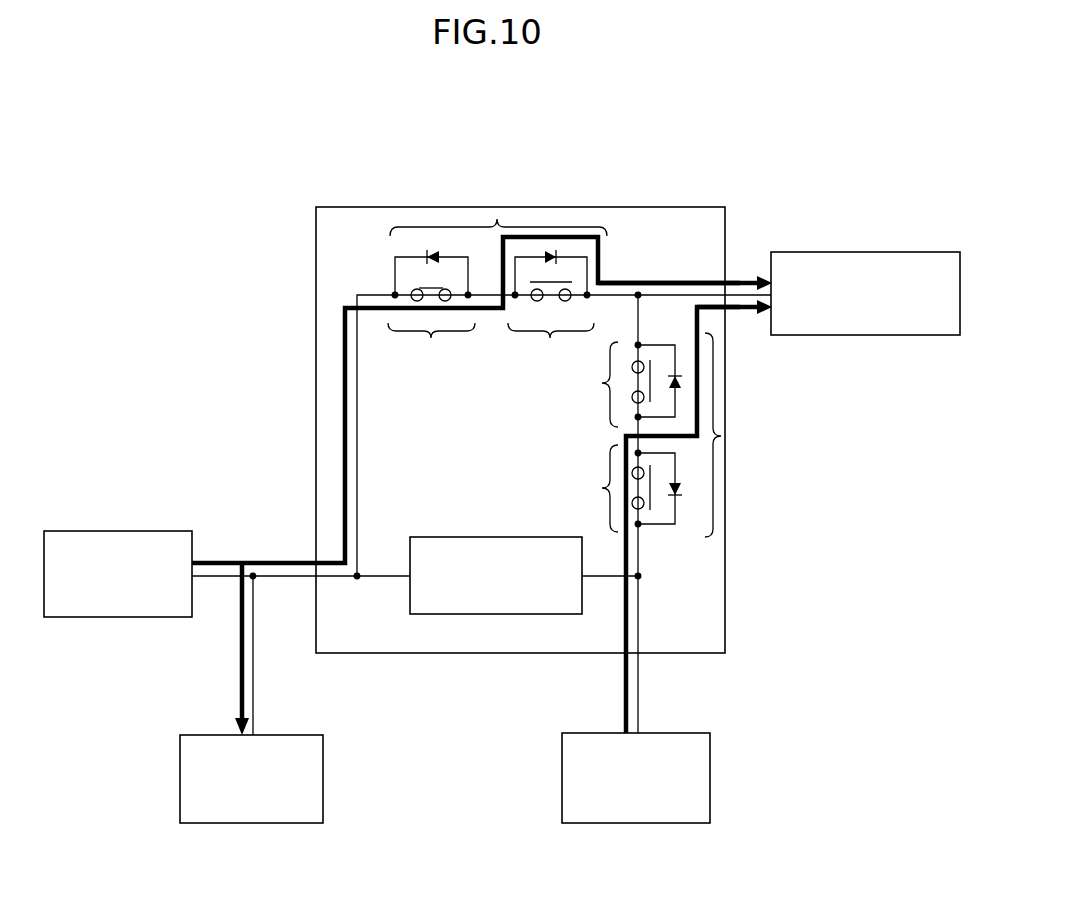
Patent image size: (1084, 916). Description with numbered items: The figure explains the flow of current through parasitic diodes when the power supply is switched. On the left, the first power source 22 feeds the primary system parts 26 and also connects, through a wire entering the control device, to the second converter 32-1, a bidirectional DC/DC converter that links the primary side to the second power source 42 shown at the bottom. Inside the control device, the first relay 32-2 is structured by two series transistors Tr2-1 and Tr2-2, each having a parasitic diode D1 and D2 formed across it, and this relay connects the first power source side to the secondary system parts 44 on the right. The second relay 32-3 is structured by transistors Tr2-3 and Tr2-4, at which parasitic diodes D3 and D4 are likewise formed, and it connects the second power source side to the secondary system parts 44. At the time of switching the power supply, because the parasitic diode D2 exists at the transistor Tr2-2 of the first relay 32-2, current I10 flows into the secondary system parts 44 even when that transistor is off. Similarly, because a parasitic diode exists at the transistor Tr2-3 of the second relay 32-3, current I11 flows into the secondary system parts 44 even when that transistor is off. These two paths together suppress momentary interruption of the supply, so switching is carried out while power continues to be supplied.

The first power source 22 is at (112, 531).
The primary system parts 26 is at (268, 824).
The second power source 42 is at (710, 790).
The secondary system parts 44 is at (876, 252).
The second converter 32-1 is at (458, 537).
The first relay 32-2 is at (497, 219).
The second relay 32-3 is at (725, 436).
The parasitic diode D1 is at (441, 254).
The parasitic diode D2 is at (568, 253).
The parasitic diode D3 is at (678, 364).
The parasitic diode D4 is at (685, 512).
The transistor Tr2-1 is at (431, 329).
The transistor Tr2-2 is at (551, 327).
The transistor Tr2-3 is at (594, 384).
The transistor Tr2-4 is at (594, 489).
The current I10 is at (665, 280).
The current I11 is at (740, 312).